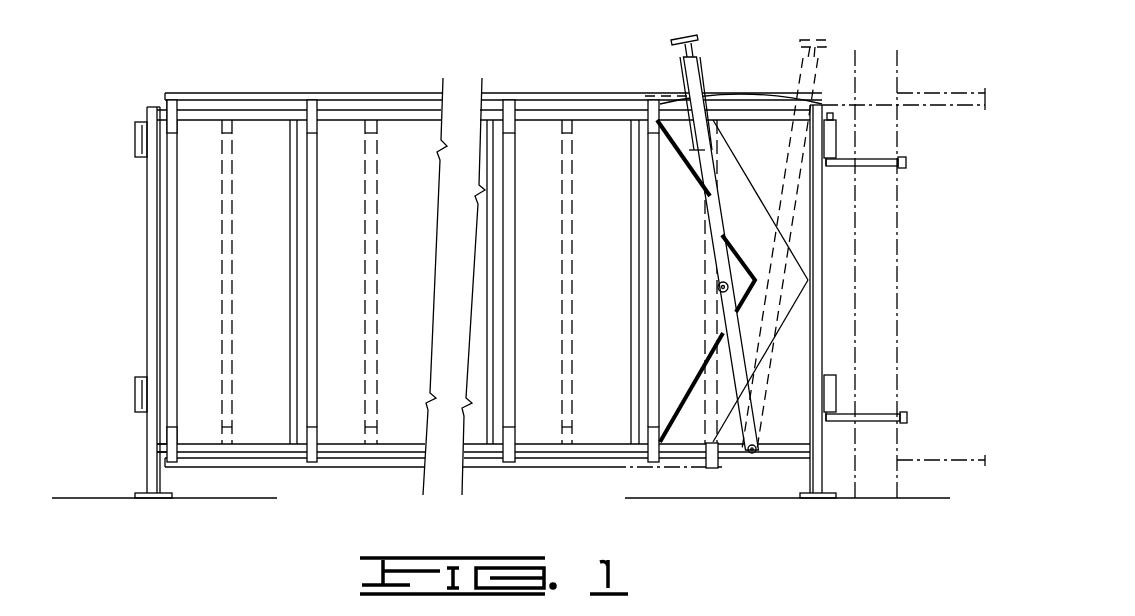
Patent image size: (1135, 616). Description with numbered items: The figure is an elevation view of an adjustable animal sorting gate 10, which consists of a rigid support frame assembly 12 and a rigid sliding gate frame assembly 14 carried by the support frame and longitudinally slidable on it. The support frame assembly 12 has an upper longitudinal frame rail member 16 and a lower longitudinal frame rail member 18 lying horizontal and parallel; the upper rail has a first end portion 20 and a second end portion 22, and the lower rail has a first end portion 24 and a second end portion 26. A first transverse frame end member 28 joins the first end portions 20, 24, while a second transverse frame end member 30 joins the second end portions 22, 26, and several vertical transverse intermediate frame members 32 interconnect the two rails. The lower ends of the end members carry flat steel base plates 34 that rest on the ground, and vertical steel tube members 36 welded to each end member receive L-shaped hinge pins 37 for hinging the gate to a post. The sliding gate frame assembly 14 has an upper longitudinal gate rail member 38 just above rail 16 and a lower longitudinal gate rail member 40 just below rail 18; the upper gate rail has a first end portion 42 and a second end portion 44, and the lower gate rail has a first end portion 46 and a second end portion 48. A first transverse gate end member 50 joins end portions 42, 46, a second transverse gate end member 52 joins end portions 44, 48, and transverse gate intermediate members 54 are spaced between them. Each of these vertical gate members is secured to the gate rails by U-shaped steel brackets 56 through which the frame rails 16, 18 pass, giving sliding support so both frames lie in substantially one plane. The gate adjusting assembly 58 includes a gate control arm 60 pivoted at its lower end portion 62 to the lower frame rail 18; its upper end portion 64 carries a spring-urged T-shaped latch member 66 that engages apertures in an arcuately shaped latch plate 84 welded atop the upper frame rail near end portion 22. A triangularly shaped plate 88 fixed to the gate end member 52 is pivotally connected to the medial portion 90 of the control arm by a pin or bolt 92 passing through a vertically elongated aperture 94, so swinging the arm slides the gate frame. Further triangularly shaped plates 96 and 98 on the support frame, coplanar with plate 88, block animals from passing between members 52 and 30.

The adjustable animal sorting gate 10 is at (518, 284).
The rigid support frame assembly 12 is at (146, 178).
The rigid sliding gate frame assembly 14 is at (364, 88).
The upper longitudinal frame rail member 16 is at (418, 112).
The lower longitudinal frame rail member 18 is at (353, 453).
The first end portion 20 is at (160, 106).
The second end portion 22 is at (822, 113).
The first end portion 24 is at (165, 452).
The second end portion 26 is at (800, 453).
The first transverse frame end member 28 is at (147, 270).
The second transverse frame end member 30 is at (813, 208).
The transverse intermediate frame member 32 is at (300, 276).
The base plate 34 is at (143, 493).
The steel tube member 36 is at (135, 145).
The L-shaped hinge pin 37 is at (842, 176).
The upper longitudinal gate rail member 38 is at (407, 93).
The lower longitudinal gate rail member 40 is at (398, 468).
The first end portion 42 is at (178, 96).
The second end portion 44 is at (660, 102).
The first end portion 46 is at (172, 468).
The second end portion 48 is at (652, 470).
The first transverse gate end member 50 is at (172, 236).
The second transverse gate end member 52 is at (655, 243).
The transverse gate intermediate member 54 is at (312, 211).
The U-shaped steel bracket 56 is at (311, 100).
The gate adjusting assembly 58 is at (708, 70).
The gate control arm 60 is at (717, 214).
The lower end portion 62 is at (752, 460).
The upper end portion 64 is at (698, 66).
The T-shaped latch member 66 is at (700, 40).
The arcuately shaped latch plate 84 is at (778, 103).
The triangularly shaped plate 88 is at (691, 343).
The medial portion 90 is at (729, 283).
The pin or bolt 92 is at (718, 290).
The vertically elongated aperture 94 is at (708, 259).
The triangularly shaped plate 96 is at (776, 163).
The triangularly shaped plate 98 is at (796, 419).